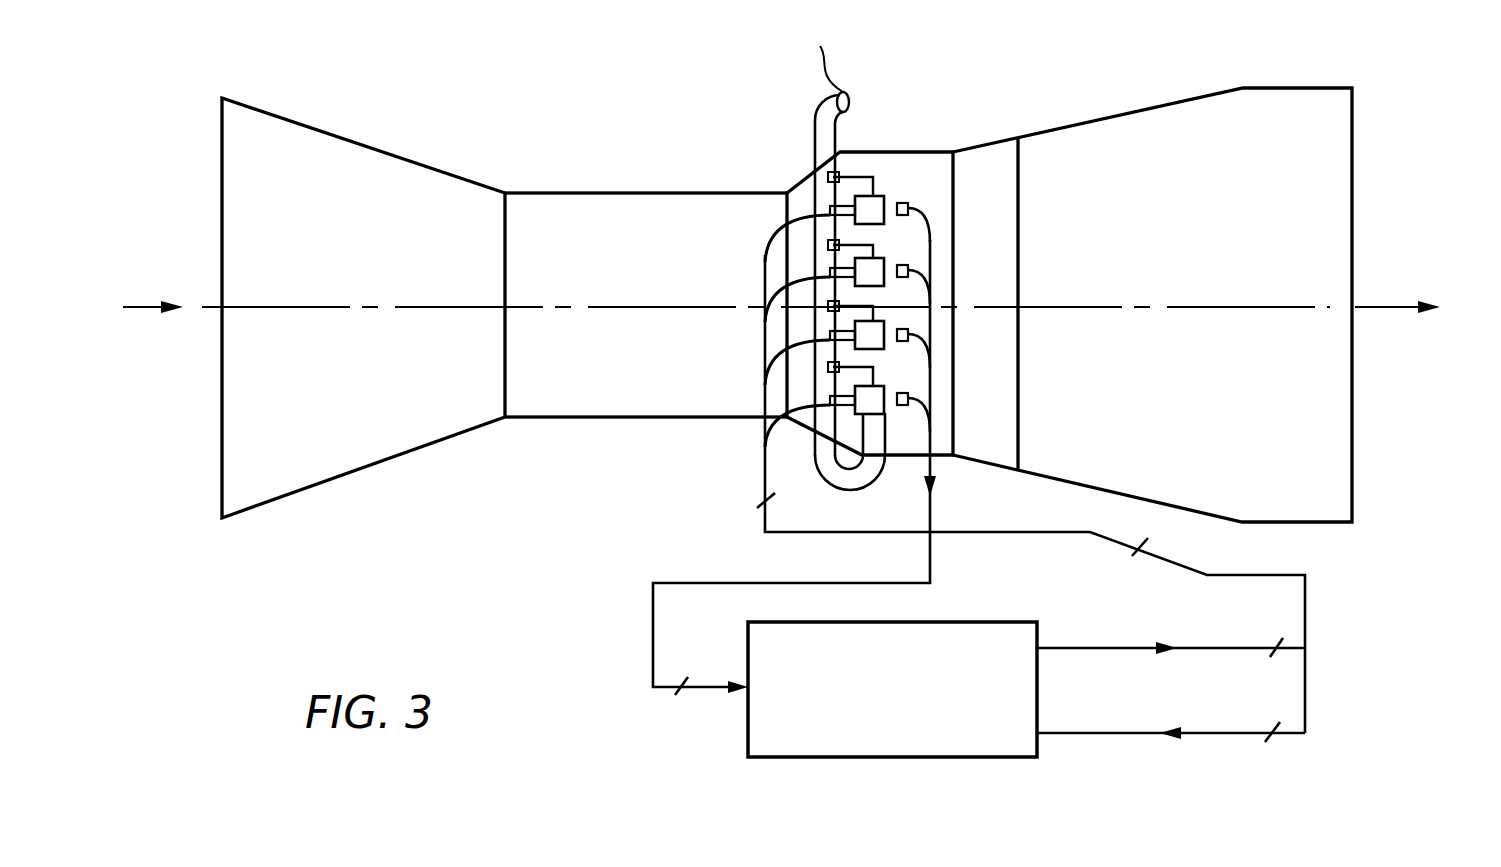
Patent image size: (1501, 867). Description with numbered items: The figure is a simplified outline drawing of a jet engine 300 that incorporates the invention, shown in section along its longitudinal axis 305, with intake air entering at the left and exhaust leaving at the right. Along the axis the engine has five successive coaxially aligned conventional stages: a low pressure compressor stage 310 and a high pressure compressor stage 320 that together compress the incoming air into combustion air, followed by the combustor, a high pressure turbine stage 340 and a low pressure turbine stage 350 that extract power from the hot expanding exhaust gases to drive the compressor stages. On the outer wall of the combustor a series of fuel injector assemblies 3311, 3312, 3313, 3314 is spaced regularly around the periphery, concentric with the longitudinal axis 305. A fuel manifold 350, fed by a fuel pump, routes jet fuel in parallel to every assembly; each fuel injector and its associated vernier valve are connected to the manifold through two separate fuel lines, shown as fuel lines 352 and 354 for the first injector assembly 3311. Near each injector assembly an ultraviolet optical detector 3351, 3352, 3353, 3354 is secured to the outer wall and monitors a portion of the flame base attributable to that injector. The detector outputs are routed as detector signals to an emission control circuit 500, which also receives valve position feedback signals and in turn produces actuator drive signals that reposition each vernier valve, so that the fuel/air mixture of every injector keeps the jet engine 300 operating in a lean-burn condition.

The jet engine 300 is at (932, 186).
The longitudinal axis 305 is at (212, 306).
The low pressure compressor stage 310 is at (343, 365).
The high pressure compressor stage 320 is at (613, 363).
The high pressure turbine stage 340 is at (990, 458).
The low pressure turbine stage / fuel manifold 350 is at (1176, 379).
The fuel line 352 is at (832, 170).
The fuel line 354 is at (830, 212).
The fuel injector assembly 3311 is at (873, 224).
The fuel injector assembly 3312 is at (873, 286).
The fuel injector assembly 3313 is at (873, 349).
The fuel injector assembly 3314 is at (873, 414).
The detector 3351 is at (910, 208).
The detector 3352 is at (910, 270).
The detector 3353 is at (910, 335).
The detector 3354 is at (910, 398).
The emission control circuit 500 is at (931, 757).